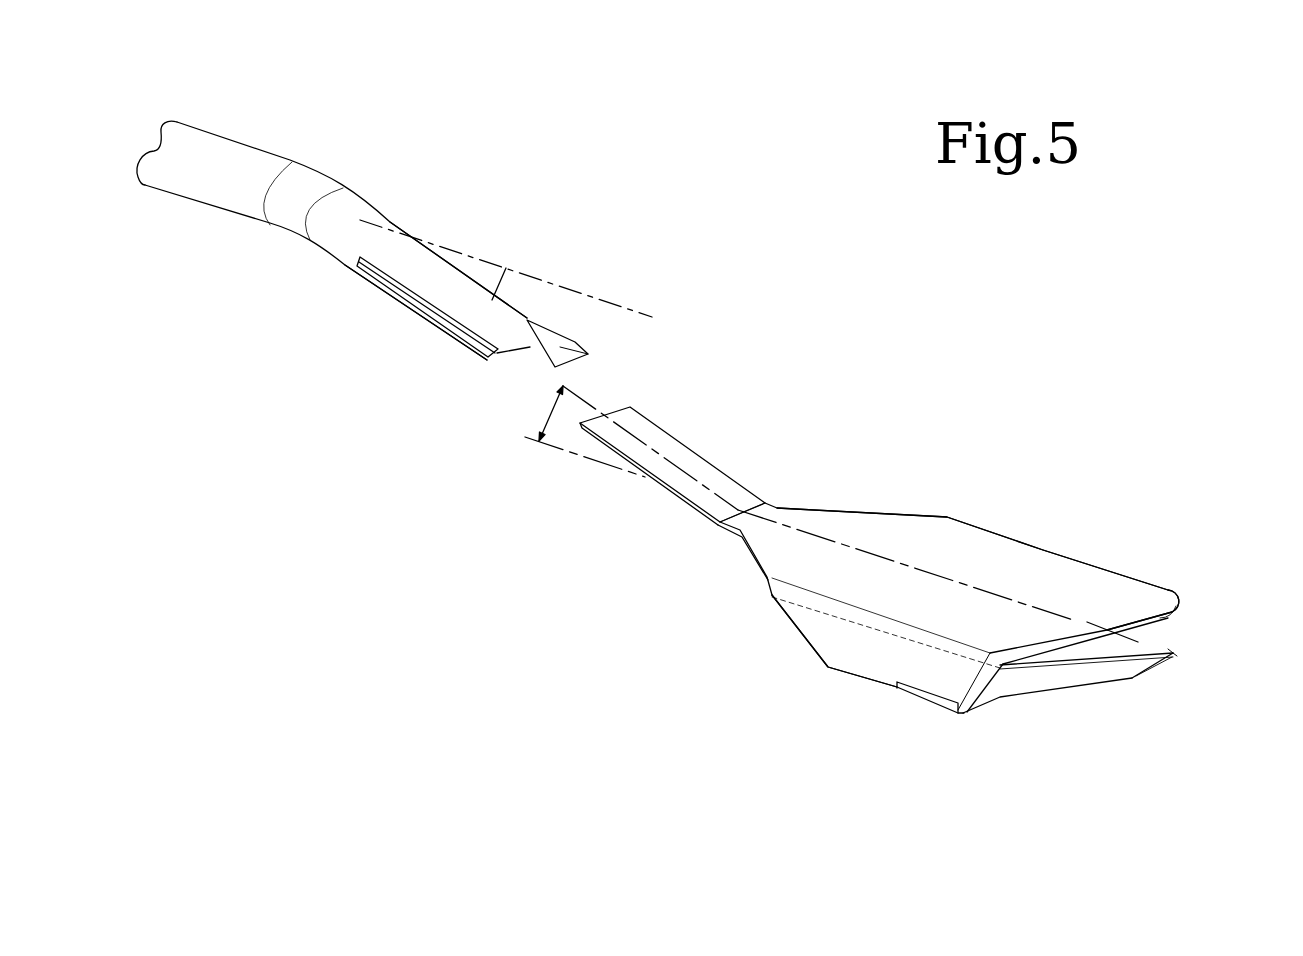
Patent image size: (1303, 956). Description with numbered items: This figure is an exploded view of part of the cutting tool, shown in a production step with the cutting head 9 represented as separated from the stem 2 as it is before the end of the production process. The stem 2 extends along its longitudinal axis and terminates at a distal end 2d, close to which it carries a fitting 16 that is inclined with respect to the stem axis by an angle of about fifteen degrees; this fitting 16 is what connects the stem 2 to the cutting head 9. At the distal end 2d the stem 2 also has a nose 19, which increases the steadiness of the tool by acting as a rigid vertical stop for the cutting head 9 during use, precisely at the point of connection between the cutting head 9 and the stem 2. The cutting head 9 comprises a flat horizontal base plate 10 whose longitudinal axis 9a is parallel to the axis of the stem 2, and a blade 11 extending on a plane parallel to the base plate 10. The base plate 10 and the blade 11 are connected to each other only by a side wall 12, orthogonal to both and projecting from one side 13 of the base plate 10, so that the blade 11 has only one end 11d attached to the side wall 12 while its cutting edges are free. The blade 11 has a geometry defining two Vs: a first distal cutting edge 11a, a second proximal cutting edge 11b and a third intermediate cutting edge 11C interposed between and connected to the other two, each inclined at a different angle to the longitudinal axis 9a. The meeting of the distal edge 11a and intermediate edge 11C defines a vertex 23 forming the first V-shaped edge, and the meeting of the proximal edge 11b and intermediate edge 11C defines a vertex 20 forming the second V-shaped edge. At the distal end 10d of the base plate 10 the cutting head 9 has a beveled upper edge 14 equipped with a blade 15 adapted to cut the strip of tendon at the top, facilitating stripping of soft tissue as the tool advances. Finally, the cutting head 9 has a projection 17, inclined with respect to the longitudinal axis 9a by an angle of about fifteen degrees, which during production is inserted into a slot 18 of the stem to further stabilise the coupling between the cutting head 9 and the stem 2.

The stem 2 is at (229, 131).
The distal end 2d is at (497, 347).
The cutting head 9 is at (502, 293).
The longitudinal axis 9a is at (830, 537).
The base plate 10 is at (892, 535).
The distal end 10d is at (1107, 618).
The blade 11 is at (1053, 677).
The first distal cutting edge 11a is at (1015, 700).
The second proximal cutting edge 11b is at (1138, 655).
The third intermediate cutting edge 11C is at (1160, 660).
The end 11d is at (897, 683).
The side wall 12 is at (875, 648).
The side 13 is at (803, 590).
The beveled upper edge 14 is at (1142, 613).
The blade 15 is at (1157, 620).
The fitting 16 is at (340, 237).
The projection 17 is at (637, 452).
The slot 18 is at (423, 310).
The nose 19 is at (567, 340).
The vertex 20 is at (1173, 652).
The vertex 23 is at (1132, 680).